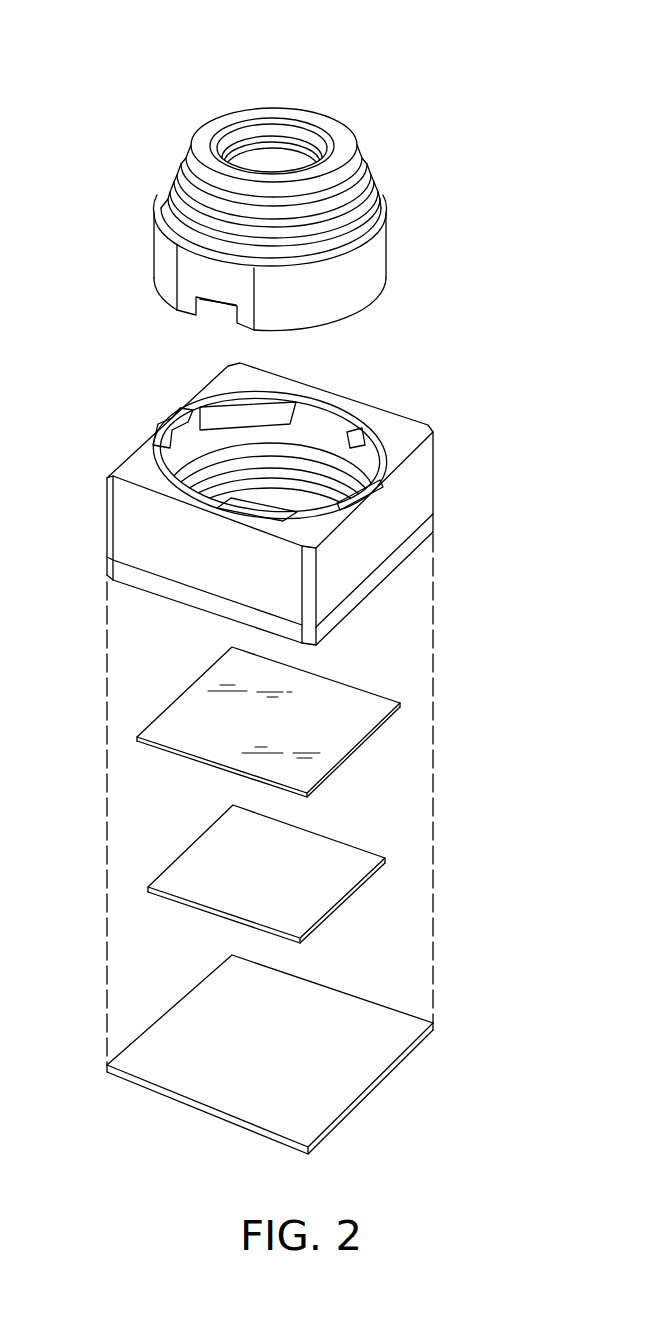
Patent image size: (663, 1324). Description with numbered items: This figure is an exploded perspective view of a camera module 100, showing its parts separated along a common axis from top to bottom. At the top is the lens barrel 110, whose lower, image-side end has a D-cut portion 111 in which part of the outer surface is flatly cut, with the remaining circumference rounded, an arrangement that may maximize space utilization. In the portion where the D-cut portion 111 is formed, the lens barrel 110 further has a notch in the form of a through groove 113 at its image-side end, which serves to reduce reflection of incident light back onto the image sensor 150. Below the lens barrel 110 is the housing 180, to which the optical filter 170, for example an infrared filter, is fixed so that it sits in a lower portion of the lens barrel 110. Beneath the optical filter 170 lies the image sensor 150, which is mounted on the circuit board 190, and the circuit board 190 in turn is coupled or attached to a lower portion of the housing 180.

The camera module 100 is at (302, 37).
The lens barrel 110 is at (367, 277).
The D-cut portion 111 is at (190, 276).
The through groove 113 is at (223, 308).
The housing 180 is at (425, 486).
The optical filter 170 is at (347, 708).
The image sensor 150 is at (358, 858).
The circuit board 190 is at (410, 1023).